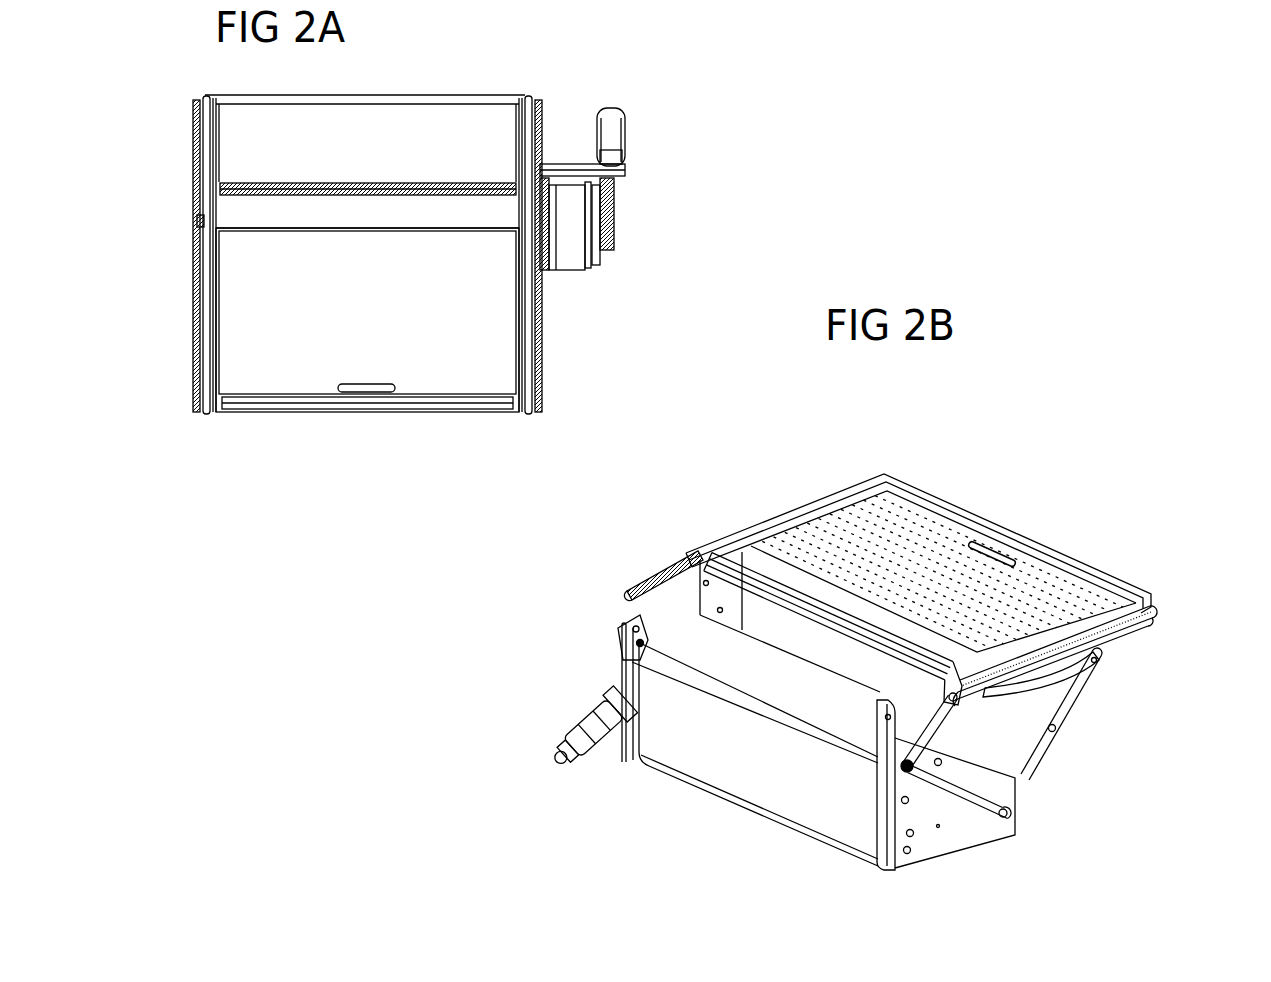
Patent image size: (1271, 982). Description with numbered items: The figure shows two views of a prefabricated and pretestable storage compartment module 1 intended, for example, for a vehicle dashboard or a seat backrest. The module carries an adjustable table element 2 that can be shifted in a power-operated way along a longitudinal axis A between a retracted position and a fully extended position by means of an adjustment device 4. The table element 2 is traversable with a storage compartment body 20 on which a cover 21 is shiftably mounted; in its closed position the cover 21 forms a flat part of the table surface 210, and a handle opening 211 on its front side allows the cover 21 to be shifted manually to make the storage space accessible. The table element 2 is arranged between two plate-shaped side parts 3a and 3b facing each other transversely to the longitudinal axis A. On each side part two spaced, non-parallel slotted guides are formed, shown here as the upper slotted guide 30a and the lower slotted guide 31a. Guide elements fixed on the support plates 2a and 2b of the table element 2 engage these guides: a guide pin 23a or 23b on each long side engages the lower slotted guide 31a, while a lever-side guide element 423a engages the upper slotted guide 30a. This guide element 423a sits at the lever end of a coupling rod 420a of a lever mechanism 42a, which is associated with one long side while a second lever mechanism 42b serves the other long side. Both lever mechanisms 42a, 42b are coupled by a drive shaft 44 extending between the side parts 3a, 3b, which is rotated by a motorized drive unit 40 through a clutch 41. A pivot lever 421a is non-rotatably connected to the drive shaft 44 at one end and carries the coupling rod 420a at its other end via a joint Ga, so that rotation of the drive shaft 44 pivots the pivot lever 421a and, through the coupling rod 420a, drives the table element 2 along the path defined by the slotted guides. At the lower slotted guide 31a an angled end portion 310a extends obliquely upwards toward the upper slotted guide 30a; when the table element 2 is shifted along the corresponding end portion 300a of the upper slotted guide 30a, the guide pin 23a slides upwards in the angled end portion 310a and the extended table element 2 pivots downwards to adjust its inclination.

In FIG. 2A, the storage compartment module 1 is at (484, 432).
In FIG. 2B, the storage compartment module 1 is at (985, 470).
In FIG. 2A, the table element 2 is at (446, 93).
In FIG. 2B, the table element 2 is at (887, 558).
In FIG. 2B, the support plate 2a is at (972, 668).
In FIG. 2B, the support plate 2b is at (690, 577).
In FIG. 2A, the storage compartment body 20 is at (218, 411).
In FIG. 2B, the storage compartment body 20 is at (805, 749).
In FIG. 2A, the cover 21 is at (517, 331).
In FIG. 2B, the cover 21 is at (866, 493).
In FIG. 2A, the table surface 210 is at (393, 322).
In FIG. 2A, the handle opening 211 is at (358, 393).
In FIG. 2B, the handle opening 211 is at (1004, 545).
In FIG. 2B, the guide pin 23a is at (876, 738).
In FIG. 2B, the guide pin 23b is at (629, 620).
In FIG. 2A, the side part 3a is at (198, 392).
In FIG. 2B, the side part 3a is at (897, 822).
In FIG. 2A, the side part 3b is at (537, 395).
In FIG. 2B, the side part 3b is at (611, 648).
In FIG. 2B, the upper slotted guide 30a is at (1151, 603).
In FIG. 2B, the end portion 300a is at (1140, 622).
In FIG. 2B, the angled end portion 310a is at (1100, 658).
In FIG. 2B, the lower slotted guide 31a is at (1001, 700).
In FIG. 2A, the adjustment device 4 is at (625, 204).
In FIG. 2B, the adjustment device 4 is at (883, 676).
In FIG. 2A, the motorized drive unit 40 is at (619, 128).
In FIG. 2B, the motorized drive unit 40 is at (580, 723).
In FIG. 2A, the clutch 41 is at (582, 272).
In FIG. 2A, the lever mechanism 42a is at (185, 131).
In FIG. 2B, the lever mechanism 42a is at (938, 822).
In FIG. 2A, the lever mechanism 42b is at (546, 103).
In FIG. 2B, the coupling rod 420a is at (896, 766).
In FIG. 2B, the pivot lever 421a is at (1011, 793).
In FIG. 2B, the guide element 423a is at (1001, 706).
In FIG. 2A, the drive shaft 44 is at (202, 226).
In FIG. 2B, the drive shaft 44 is at (1005, 820).
In FIG. 2A, the longitudinal axis A is at (366, 468).
In FIG. 2B, the joint Ga is at (870, 797).